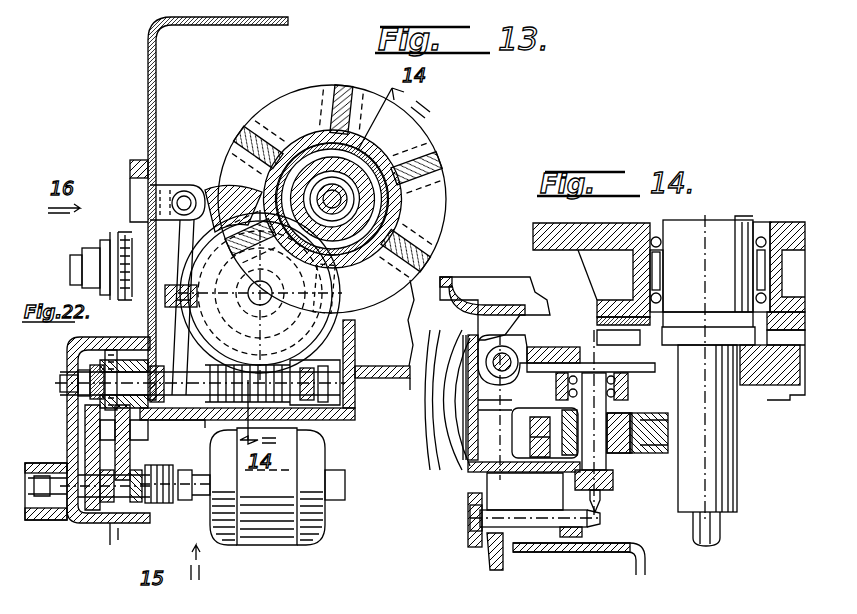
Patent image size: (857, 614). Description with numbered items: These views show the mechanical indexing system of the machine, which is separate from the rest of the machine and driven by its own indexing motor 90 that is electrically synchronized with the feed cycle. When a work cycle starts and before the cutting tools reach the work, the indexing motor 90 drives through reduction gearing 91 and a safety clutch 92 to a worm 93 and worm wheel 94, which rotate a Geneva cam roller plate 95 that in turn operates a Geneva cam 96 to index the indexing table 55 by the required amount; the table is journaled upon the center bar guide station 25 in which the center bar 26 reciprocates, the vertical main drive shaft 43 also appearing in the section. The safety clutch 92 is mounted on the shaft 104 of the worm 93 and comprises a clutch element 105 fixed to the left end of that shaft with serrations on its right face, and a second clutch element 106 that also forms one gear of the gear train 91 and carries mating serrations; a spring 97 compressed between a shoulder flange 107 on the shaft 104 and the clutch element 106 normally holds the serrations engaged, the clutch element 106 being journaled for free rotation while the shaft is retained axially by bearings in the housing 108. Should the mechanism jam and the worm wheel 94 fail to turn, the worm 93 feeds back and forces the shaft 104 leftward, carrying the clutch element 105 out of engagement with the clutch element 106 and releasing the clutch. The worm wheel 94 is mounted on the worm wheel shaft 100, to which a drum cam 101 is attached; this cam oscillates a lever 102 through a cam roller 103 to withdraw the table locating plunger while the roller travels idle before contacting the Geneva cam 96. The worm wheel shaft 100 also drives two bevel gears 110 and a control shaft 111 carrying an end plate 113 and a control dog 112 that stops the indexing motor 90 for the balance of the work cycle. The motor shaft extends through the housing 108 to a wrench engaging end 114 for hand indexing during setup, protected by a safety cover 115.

In FIG. 14, the center bar guide station 25 is at (748, 228).
In FIG. 14, the center bar 26 is at (690, 222).
In FIG. 14, the vertical main drive shaft 43 is at (720, 530).
In FIG. 14, the indexing table 55 is at (530, 232).
In FIG. 13, the indexing motor 90 is at (312, 540).
In FIG. 13, the reduction gearing 91 is at (78, 420).
In FIG. 13, the safety clutch 92 is at (95, 366).
In FIG. 22, the safety clutch 92 is at (98, 250).
In FIG. 13, the worm 93 is at (325, 422).
In FIG. 14, the worm 93 is at (508, 345).
In FIG. 13, the worm wheel 94 is at (345, 342).
In FIG. 14, the worm wheel 94 is at (668, 373).
In FIG. 14, the Geneva cam roller plate 95 is at (563, 365).
In FIG. 14, the Geneva cam 96 is at (596, 330).
In FIG. 13, the spring 97 is at (205, 415).
In FIG. 13, the worm wheel shaft 100 is at (338, 296).
In FIG. 14, the worm wheel shaft 100 is at (622, 458).
In FIG. 14, the drum cam 101 is at (668, 430).
In FIG. 13, the lever 102 is at (165, 205).
In FIG. 13, the cam roller 103 is at (260, 282).
In FIG. 13, the shaft 104 is at (70, 392).
In FIG. 22, the shaft 104 is at (72, 277).
In FIG. 13, the clutch element 105 is at (78, 374).
In FIG. 22, the clutch element 105 is at (85, 260).
In FIG. 13, the clutch element 106 is at (80, 352).
In FIG. 22, the clutch element 106 is at (118, 245).
In FIG. 13, the shoulder flange 107 is at (214, 440).
In FIG. 13, the housing 108 is at (112, 535).
In FIG. 14, the bevel gears 110 is at (602, 517).
In FIG. 14, the control shaft 111 is at (515, 552).
In FIG. 14, the control dog 112 is at (470, 516).
In FIG. 14, the end plate 113 is at (478, 488).
In FIG. 13, the wrench engaging end 114 is at (58, 518).
In FIG. 13, the safety cover 115 is at (67, 463).